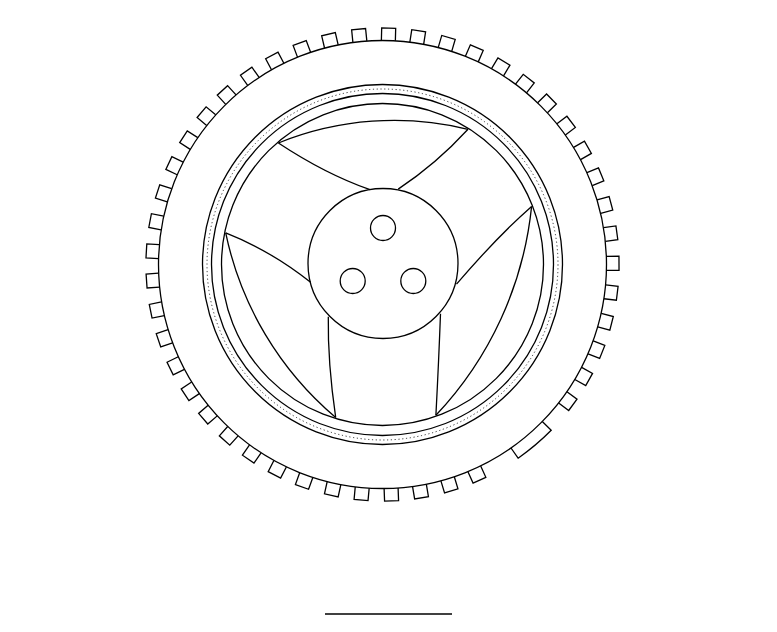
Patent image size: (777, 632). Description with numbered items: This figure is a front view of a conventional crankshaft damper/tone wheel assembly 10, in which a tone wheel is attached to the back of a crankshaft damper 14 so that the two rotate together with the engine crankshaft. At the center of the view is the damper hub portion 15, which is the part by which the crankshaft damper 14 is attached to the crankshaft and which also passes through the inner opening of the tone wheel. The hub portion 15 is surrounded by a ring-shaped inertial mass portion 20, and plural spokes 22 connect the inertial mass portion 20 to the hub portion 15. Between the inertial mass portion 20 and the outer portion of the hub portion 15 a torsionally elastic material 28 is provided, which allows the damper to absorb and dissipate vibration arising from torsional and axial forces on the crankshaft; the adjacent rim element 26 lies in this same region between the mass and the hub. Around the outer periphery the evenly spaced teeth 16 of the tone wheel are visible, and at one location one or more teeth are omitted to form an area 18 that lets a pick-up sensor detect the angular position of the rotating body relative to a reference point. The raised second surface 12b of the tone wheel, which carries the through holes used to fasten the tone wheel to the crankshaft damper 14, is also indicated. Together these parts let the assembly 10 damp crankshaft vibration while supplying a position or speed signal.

The crankshaft damper/tone wheel assembly 10 is at (122, 153).
The second surface 12b is at (482, 330).
The crankshaft damper 14 is at (172, 366).
The hub portion 15 is at (457, 283).
The teeth 16 is at (612, 205).
The area 18 is at (530, 452).
The inertial mass portion 20 is at (253, 407).
The spokes 22 is at (478, 178).
The rim 26 is at (548, 303).
The torsionally elastic material 28 is at (565, 273).